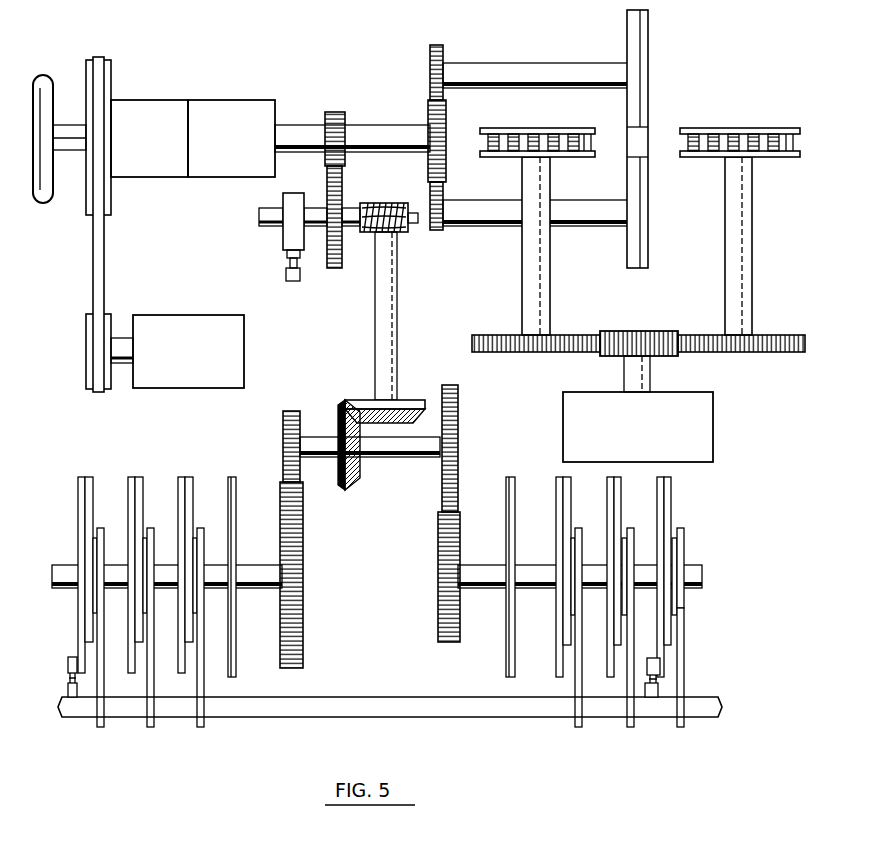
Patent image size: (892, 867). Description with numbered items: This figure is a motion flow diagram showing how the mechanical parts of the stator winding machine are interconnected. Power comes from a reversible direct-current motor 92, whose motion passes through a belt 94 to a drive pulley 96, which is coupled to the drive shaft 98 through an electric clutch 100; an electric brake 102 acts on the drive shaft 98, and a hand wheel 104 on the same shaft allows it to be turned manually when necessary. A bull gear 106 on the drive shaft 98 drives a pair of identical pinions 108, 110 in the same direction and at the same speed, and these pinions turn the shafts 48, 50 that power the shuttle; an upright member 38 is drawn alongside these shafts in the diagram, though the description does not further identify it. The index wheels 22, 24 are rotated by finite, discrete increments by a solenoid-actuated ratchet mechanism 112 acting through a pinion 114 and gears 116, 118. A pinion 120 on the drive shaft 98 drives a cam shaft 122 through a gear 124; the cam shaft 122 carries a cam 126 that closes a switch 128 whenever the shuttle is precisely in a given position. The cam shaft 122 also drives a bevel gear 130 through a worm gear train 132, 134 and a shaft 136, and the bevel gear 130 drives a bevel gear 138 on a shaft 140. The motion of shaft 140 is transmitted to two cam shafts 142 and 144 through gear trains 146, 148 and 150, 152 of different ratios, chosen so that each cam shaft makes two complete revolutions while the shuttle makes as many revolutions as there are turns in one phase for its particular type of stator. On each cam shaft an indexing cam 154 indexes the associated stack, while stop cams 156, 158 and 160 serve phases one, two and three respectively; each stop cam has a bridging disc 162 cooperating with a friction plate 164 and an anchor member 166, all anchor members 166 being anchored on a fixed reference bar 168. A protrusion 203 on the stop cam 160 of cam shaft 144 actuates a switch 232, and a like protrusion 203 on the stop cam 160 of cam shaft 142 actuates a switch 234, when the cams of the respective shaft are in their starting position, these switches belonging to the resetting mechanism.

The index wheel 22 is at (716, 140).
The index wheel 24 is at (537, 142).
The column 38 is at (635, 72).
The shaft 48 is at (512, 75).
The shaft 50 is at (502, 206).
The reversible D. C. motor 92 is at (222, 365).
The belt 94 is at (97, 279).
The drive pulley 96 is at (107, 85).
The drive shaft 98 is at (297, 133).
The electric clutch 100 is at (146, 118).
The electric brake 102 is at (228, 118).
The hand wheel 104 is at (45, 92).
The bull gear 106 is at (440, 138).
The pinion 108 is at (445, 60).
The pinion 110 is at (438, 200).
The solenoid-actuated ratchet mechanism 112 is at (695, 443).
The pinion 114 is at (630, 333).
The gear 116 is at (563, 333).
The gear 118 is at (760, 345).
The pinion 120 is at (345, 120).
The cam shaft 122 is at (268, 218).
The gear 124 is at (337, 268).
The cam 126 is at (293, 203).
The switch 128 is at (290, 280).
The bevel gear 130 is at (404, 408).
The worm gear train 132 is at (398, 206).
The worm gear train 134 is at (416, 224).
The shaft 136 is at (385, 294).
The bevel gear 138 is at (353, 477).
The shaft 140 is at (395, 446).
The cam shaft 142 is at (258, 575).
The cam shaft 144 is at (486, 575).
The gear train 146 is at (292, 436).
The gear train 148 is at (300, 615).
The gear train 150 is at (452, 434).
The gear train 152 is at (448, 605).
The indexing cam 154 is at (235, 480).
The stop cam 156 is at (182, 500).
The stop cam 158 is at (133, 480).
The stop cam 160 is at (82, 492).
The bridging disc 162 is at (668, 540).
The friction plate 164 is at (675, 565).
The anchor member 166 is at (680, 622).
The fixed reference bar 168 is at (468, 707).
The protrusion 203 is at (68, 668).
The switch 232 is at (651, 690).
The switch 234 is at (68, 688).